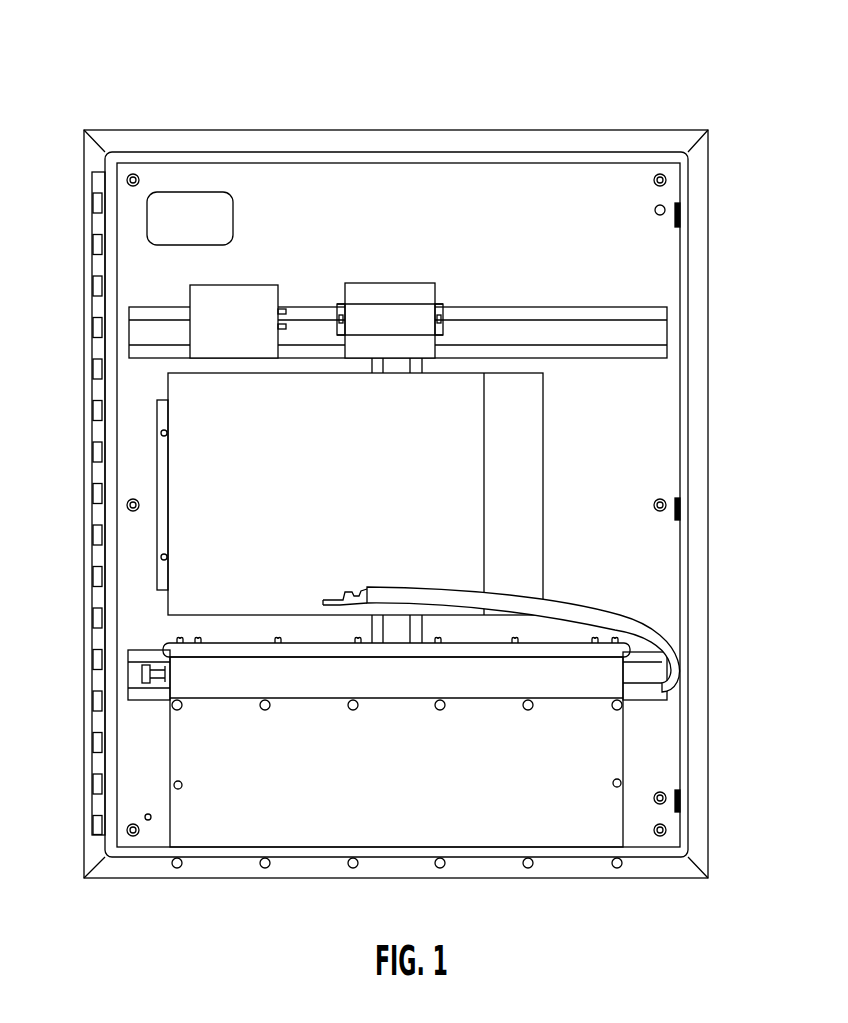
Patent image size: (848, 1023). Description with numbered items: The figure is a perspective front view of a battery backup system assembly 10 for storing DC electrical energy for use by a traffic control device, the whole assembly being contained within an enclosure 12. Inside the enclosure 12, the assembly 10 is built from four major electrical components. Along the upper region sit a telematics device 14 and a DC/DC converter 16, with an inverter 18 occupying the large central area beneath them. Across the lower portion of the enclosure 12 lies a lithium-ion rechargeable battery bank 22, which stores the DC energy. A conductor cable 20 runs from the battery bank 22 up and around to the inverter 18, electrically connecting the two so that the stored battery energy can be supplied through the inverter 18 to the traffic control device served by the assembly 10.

The battery backup system assembly 10 is at (95, 88).
The enclosure 12 is at (470, 140).
The telematics device 14 is at (252, 275).
The DC/DC converter 16 is at (415, 275).
The inverter 18 is at (550, 483).
The conductor cable 20 is at (620, 603).
The lithium-ion rechargeable battery bank 22 is at (153, 745).